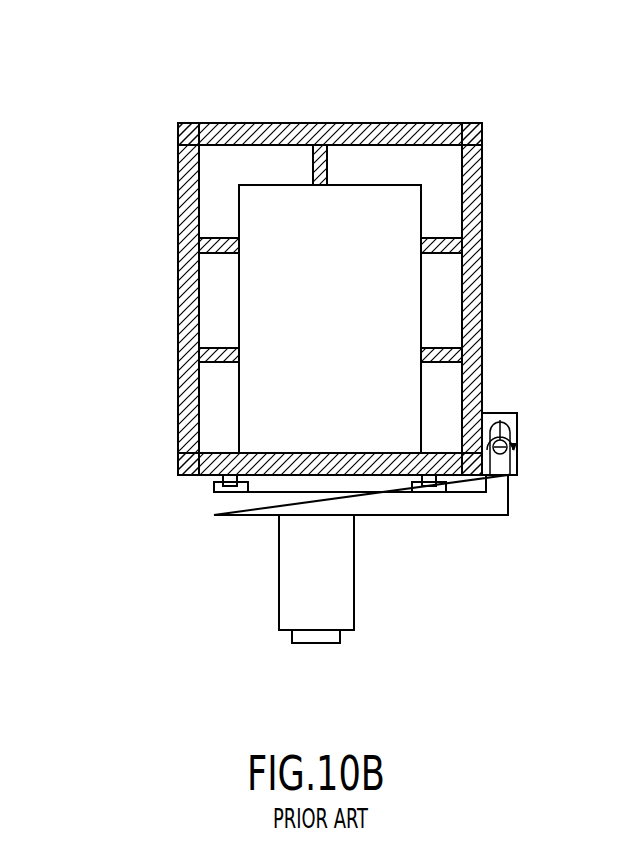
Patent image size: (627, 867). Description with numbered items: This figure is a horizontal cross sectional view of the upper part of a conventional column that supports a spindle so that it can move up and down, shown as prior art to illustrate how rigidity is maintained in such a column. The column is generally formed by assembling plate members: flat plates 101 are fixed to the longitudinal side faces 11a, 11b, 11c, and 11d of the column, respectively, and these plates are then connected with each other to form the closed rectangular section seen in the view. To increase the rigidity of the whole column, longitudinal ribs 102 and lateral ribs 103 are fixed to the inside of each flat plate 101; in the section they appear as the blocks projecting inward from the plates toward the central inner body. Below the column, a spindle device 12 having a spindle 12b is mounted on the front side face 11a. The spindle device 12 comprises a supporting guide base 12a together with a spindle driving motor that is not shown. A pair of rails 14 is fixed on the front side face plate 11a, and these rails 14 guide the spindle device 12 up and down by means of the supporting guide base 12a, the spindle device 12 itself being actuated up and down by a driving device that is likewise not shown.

The front side face 11a is at (190, 494).
The longitudinal side face 11b is at (325, 112).
The longitudinal side face 11c is at (153, 320).
The longitudinal side face 11d is at (498, 297).
The flat plate 101 is at (373, 146).
The longitudinal rib 102 is at (312, 162).
The lateral rib 103 is at (219, 207).
The spindle device 12 is at (260, 567).
The supporting guide base 12a is at (405, 517).
The spindle 12b is at (316, 644).
The rail 14 is at (224, 487).